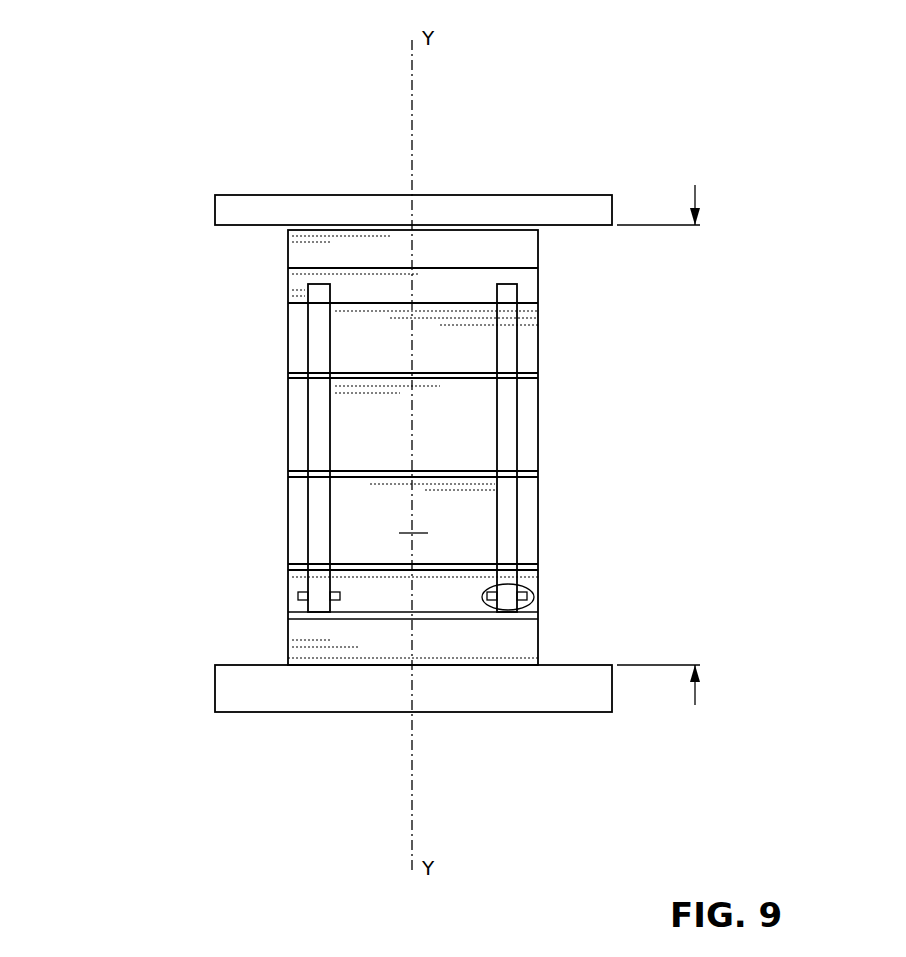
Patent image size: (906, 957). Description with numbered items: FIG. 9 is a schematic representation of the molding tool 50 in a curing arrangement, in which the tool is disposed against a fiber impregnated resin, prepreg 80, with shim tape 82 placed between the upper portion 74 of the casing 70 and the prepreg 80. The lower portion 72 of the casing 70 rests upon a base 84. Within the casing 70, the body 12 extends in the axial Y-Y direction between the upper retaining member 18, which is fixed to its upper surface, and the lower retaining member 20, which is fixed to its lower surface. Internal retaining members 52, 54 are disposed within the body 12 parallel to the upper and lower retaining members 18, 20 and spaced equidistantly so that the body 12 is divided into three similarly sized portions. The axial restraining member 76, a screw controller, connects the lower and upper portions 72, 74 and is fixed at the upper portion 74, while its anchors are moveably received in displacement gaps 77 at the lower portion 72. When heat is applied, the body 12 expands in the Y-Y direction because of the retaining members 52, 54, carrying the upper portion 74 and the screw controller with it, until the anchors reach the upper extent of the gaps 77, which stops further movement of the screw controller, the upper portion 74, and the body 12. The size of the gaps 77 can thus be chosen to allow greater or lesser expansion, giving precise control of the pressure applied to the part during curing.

The tool 50 is at (132, 277).
The prepreg 80 is at (515, 195).
The base 84 is at (550, 713).
The shim tape 82 is at (538, 245).
The upper portion 74 is at (552, 286).
The upper retaining member 18 is at (538, 303).
The internal retaining member 52 is at (522, 375).
The internal retaining member 54 is at (522, 472).
The body 12 is at (432, 509).
The lower retaining member 20 is at (538, 565).
The axial restraining member 76 is at (292, 518).
The displacement gaps 77 is at (534, 600).
The casing 70 is at (268, 292).
The lower portion 72 is at (265, 589).